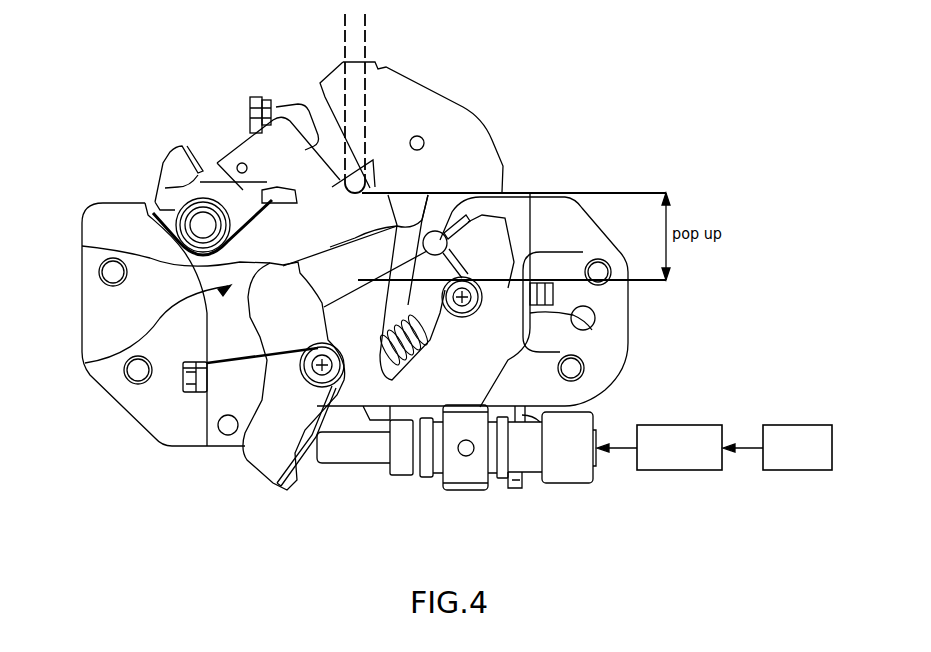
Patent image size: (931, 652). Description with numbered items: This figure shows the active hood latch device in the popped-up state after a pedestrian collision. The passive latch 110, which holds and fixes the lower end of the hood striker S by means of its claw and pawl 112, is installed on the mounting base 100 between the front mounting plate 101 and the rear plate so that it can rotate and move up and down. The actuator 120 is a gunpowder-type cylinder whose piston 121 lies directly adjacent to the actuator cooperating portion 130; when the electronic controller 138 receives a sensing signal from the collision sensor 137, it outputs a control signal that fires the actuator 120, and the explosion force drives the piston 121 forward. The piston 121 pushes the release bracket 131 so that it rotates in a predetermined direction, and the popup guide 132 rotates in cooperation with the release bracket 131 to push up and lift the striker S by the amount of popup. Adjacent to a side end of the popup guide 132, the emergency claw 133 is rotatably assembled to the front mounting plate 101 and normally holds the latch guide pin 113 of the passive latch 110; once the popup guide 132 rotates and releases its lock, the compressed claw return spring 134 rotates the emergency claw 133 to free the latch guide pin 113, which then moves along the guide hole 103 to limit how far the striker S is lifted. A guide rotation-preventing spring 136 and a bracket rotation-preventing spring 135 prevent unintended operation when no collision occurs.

The striker S is at (345, 17).
The mounting base 100 is at (472, 265).
The front mounting plate 101 is at (557, 197).
The guide hole 103 is at (440, 347).
The passive latch 110 is at (415, 84).
The pawl 112 is at (297, 112).
The latch guide pin 113 is at (499, 195).
The actuator 120 is at (566, 485).
The piston 121 is at (360, 453).
The actuator cooperating portion 130 is at (85, 363).
The release bracket 131 is at (257, 455).
The popup guide 132 is at (215, 183).
The emergency claw 133 is at (592, 330).
The claw return spring 134 is at (583, 250).
The bracket rotation-preventing spring 135 is at (288, 488).
The guide rotation-preventing spring 136 is at (82, 246).
The collision sensor 137 is at (805, 472).
The electronic controller 138 is at (697, 472).